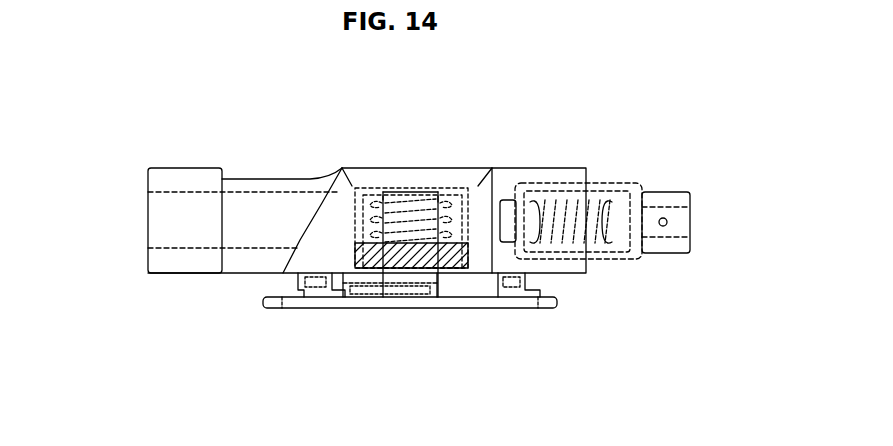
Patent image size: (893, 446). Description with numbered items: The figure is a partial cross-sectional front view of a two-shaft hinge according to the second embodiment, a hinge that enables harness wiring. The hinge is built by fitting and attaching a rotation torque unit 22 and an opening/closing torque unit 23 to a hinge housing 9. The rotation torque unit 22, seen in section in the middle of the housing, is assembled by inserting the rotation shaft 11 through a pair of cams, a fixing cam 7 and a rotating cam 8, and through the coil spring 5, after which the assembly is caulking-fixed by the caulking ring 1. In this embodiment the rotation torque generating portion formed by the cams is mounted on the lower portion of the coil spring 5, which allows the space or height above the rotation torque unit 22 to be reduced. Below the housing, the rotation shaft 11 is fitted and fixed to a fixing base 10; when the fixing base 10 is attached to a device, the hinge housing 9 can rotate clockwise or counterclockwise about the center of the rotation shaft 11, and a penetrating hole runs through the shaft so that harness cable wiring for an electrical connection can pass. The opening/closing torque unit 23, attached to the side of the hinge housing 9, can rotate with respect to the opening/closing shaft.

The caulking ring 1 is at (368, 174).
The coil spring 5 is at (406, 213).
The fixing cam 7 is at (428, 302).
The rotating cam 8 is at (386, 328).
The hinge housing 9 is at (147, 191).
The fixing base 10 is at (508, 320).
The rotation shaft 11 is at (470, 343).
The rotation torque unit 22 is at (436, 179).
The opening/closing torque unit 23 is at (613, 184).